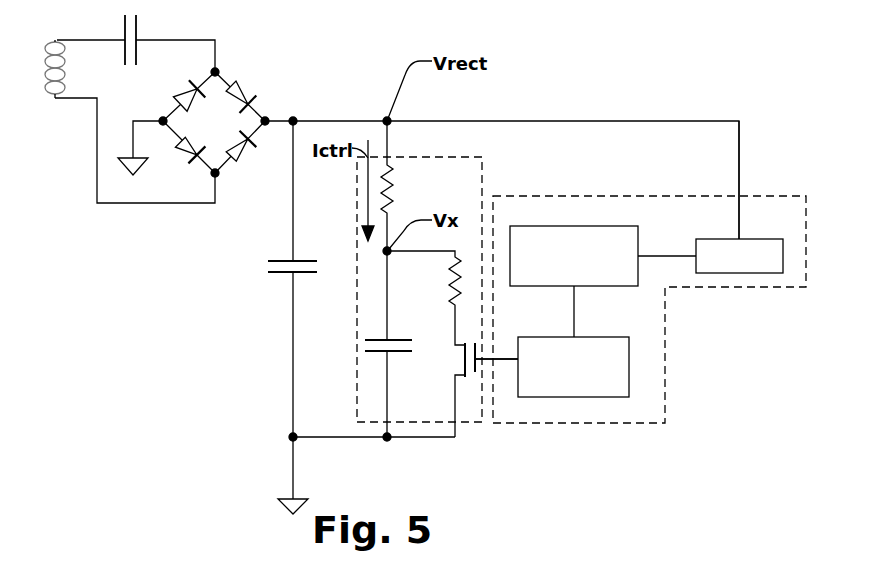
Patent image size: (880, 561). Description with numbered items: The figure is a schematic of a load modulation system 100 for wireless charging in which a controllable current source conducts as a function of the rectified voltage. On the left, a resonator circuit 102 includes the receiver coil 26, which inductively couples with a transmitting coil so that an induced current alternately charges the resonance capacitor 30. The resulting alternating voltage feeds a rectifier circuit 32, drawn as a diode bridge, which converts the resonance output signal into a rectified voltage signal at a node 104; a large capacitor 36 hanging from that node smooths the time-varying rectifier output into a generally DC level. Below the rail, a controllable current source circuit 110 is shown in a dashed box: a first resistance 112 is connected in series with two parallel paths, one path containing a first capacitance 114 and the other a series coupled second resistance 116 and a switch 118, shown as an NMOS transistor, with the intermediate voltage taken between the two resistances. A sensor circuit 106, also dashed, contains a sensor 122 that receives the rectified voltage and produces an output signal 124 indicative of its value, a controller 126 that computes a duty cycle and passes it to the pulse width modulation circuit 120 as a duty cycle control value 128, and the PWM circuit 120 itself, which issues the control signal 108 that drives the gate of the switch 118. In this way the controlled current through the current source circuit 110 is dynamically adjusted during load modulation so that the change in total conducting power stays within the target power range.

The receiver coil 26 is at (57, 40).
The resonance capacitor 30 is at (138, 32).
The rectifier circuit 32 is at (230, 82).
The large capacitor 36 is at (282, 273).
The load modulation system 100 is at (622, 76).
The resonator circuit 102 is at (78, 160).
The node 104 is at (293, 121).
The sensor circuit 106 is at (752, 196).
The control signal 108 is at (504, 360).
The controllable current source circuit 110 is at (483, 165).
The first resistance R1 112 is at (393, 168).
The first capacitance 114 is at (377, 353).
The second resistance R2 116 is at (453, 303).
The switch 118 is at (452, 361).
The pulse width modulation (PWM) circuit 120 is at (630, 365).
The sensor 122 is at (738, 274).
The output signal 124 is at (660, 256).
The controller 126 is at (574, 226).
The duty cycle control value 128 is at (575, 313).